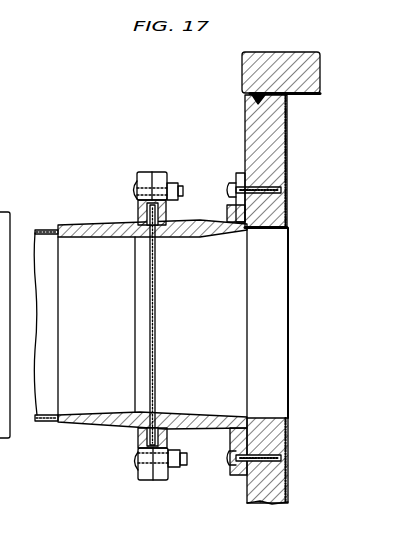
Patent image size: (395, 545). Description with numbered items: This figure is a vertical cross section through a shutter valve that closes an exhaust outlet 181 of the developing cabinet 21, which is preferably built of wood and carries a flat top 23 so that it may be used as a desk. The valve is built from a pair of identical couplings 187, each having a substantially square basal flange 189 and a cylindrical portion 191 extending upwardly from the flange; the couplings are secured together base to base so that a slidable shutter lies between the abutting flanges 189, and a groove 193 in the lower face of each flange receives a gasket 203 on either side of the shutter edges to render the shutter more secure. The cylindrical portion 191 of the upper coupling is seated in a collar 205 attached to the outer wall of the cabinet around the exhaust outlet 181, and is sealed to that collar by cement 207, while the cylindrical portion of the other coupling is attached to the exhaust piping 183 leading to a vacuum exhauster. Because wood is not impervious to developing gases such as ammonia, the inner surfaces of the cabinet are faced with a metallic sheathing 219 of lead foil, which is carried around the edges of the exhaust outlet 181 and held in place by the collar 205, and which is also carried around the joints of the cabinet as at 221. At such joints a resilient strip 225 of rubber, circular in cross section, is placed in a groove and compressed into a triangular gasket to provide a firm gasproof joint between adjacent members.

The enclosing cabinet 21 is at (270, 163).
The flat top 23 is at (250, 72).
The exhaust outlet 181 is at (282, 297).
The piping 183 is at (47, 243).
The coupling 187 is at (100, 428).
The basal flange 189 is at (147, 172).
The cylindrical portion 191 is at (97, 226).
The groove 193 is at (171, 190).
The gasket 203 is at (158, 236).
The collar 205 is at (244, 178).
The cement 207 is at (232, 226).
The metallic sheathing 219 is at (287, 212).
The sheathing at joints 221 is at (287, 118).
The strip 225 is at (262, 95).